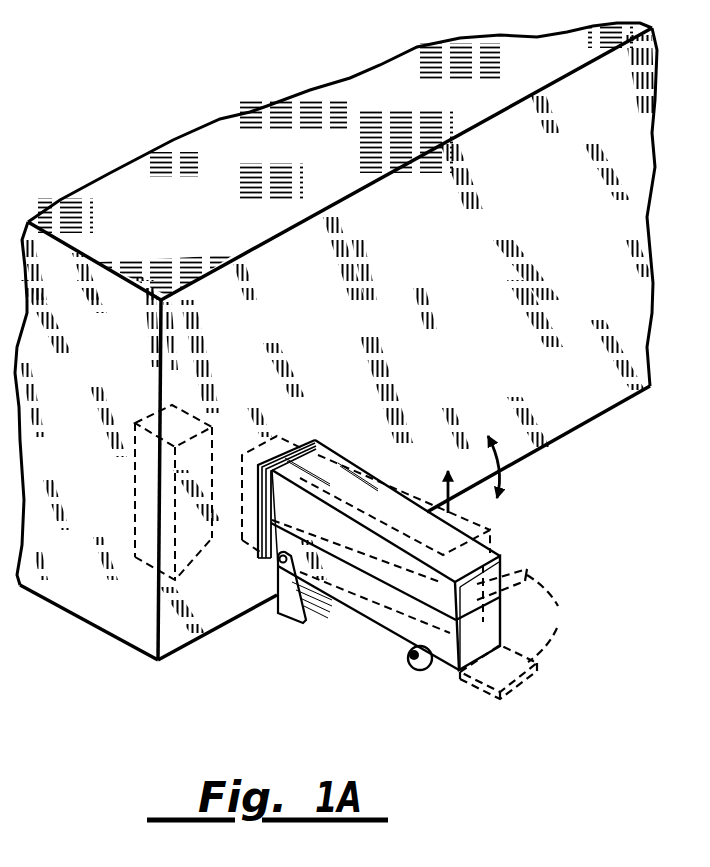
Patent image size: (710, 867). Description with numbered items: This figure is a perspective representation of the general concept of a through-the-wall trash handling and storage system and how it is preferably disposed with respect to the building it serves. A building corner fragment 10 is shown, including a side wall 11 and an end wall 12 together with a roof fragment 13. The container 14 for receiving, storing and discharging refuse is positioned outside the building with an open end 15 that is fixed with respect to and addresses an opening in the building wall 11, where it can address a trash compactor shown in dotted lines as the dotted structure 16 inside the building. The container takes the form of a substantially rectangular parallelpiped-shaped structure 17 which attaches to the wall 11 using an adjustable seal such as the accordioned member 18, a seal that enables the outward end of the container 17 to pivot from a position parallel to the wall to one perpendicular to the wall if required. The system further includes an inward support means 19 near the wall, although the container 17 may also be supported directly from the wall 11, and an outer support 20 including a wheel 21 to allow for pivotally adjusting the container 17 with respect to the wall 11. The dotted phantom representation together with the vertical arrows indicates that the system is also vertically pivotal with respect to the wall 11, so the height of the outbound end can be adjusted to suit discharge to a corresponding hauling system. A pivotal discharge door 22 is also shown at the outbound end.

The building corner fragment 10 is at (160, 124).
The side wall 11 is at (313, 324).
The end wall 12 is at (108, 359).
The roof fragment 13 is at (197, 227).
The container 14 is at (500, 534).
The open end 15 is at (316, 447).
The trash compactor 16 is at (135, 497).
The rectangular parallelpiped-shaped structure 17 is at (355, 614).
The accordioned member 18 is at (263, 562).
The inward support means 19 is at (283, 607).
The outer support 20 is at (411, 669).
The wheel 21 is at (430, 672).
The pivotal discharge door 22 is at (525, 634).